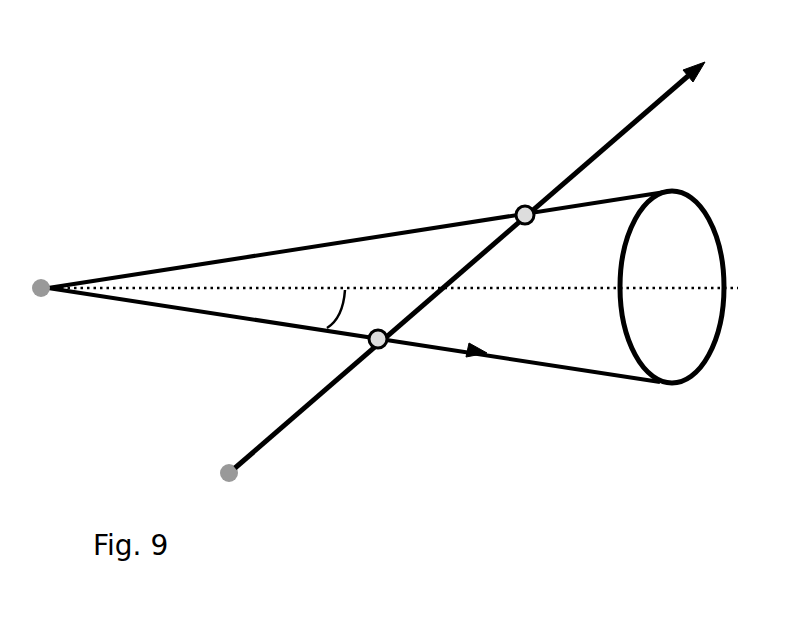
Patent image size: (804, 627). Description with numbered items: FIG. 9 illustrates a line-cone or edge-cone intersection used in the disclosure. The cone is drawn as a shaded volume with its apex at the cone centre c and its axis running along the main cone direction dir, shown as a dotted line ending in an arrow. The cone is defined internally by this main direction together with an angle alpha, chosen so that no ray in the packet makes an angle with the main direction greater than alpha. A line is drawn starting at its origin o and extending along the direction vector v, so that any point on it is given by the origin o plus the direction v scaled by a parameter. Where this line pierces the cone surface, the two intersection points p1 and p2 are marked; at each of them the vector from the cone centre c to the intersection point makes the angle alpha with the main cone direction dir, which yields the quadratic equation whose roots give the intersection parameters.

The cone centre c is at (41, 271).
The line origin o is at (217, 457).
The line direction vector v is at (470, 260).
The main cone direction dir is at (738, 279).
The first intersection point p1 is at (392, 363).
The second intersection point p2 is at (517, 190).